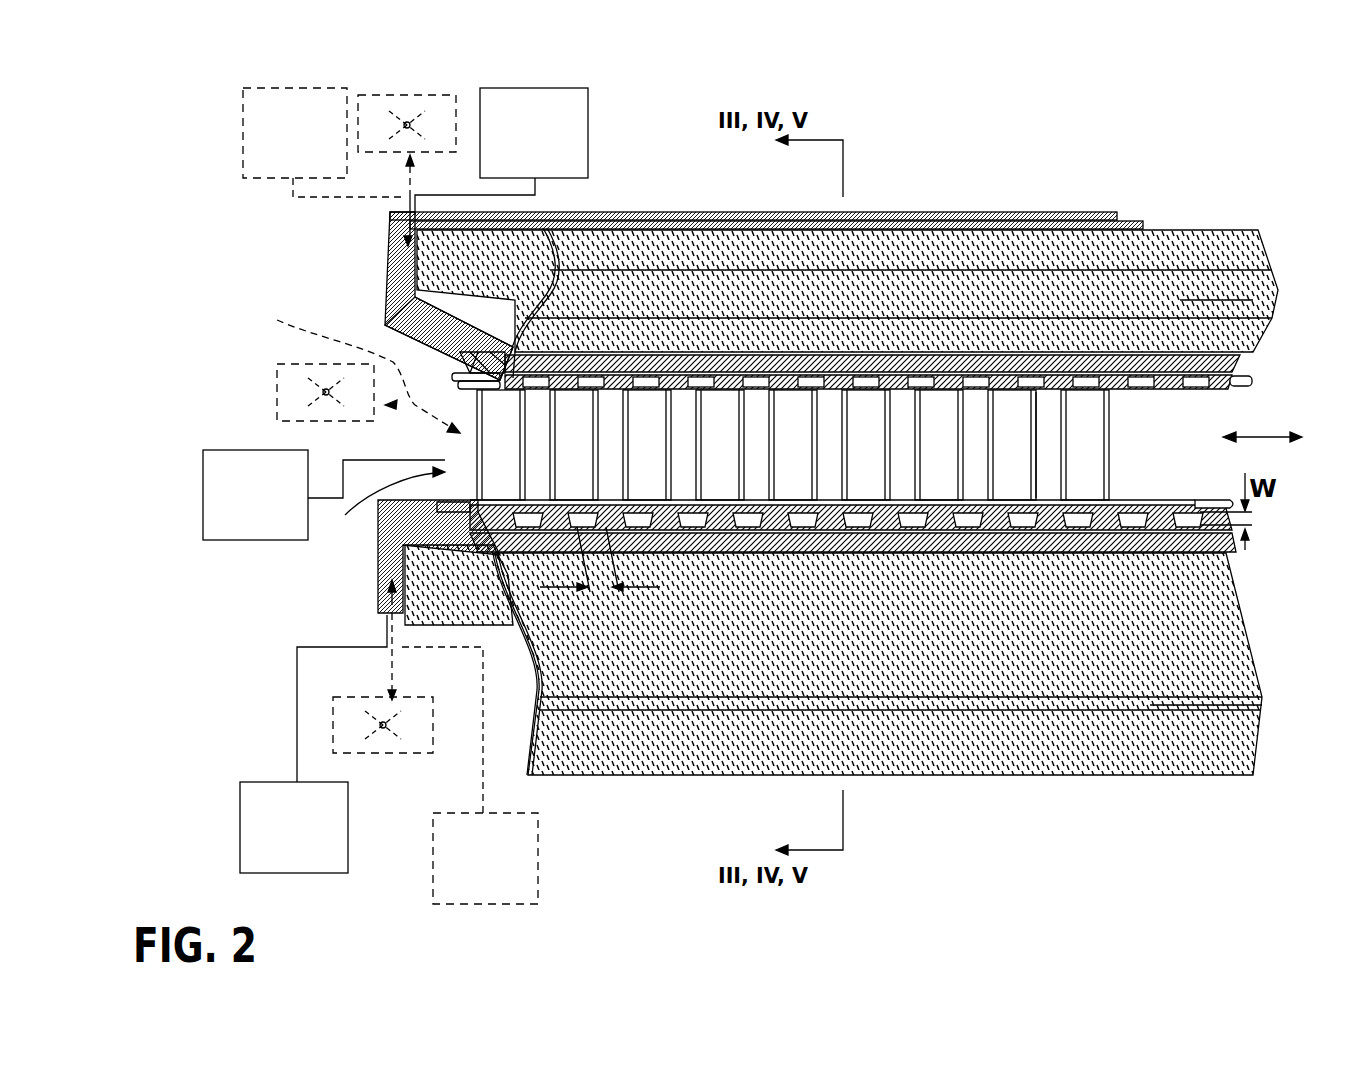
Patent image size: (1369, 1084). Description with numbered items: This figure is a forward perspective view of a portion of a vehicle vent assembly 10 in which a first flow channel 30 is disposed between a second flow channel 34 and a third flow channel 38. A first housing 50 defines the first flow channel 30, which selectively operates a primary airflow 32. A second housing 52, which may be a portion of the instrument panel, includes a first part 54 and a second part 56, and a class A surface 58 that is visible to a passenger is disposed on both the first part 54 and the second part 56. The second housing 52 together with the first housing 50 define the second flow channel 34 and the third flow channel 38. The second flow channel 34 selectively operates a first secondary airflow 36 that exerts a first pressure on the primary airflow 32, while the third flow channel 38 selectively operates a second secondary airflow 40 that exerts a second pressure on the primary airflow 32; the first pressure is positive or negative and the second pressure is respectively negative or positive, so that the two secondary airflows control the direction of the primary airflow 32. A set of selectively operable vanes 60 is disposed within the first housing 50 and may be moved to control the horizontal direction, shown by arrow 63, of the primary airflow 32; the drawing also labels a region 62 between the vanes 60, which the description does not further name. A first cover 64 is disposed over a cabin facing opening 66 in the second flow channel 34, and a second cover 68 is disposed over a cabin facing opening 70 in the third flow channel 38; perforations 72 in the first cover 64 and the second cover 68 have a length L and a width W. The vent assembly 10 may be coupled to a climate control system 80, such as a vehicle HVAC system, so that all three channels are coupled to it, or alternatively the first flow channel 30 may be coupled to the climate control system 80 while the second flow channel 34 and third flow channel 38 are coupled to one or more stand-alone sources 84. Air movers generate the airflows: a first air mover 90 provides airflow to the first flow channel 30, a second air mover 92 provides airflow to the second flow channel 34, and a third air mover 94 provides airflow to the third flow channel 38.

The vehicle vent assembly 10 is at (1280, 358).
The first flow channel 30 is at (387, 506).
The primary airflow 32 is at (356, 365).
The second flow channel 34 is at (455, 312).
The first secondary airflow 36 is at (413, 183).
The third flow channel 38 is at (475, 562).
The second secondary airflow 40 is at (387, 660).
The first housing 50 is at (390, 270).
The second housing 52 is at (490, 300).
The first part 54 is at (1070, 300).
The second part 56 is at (997, 653).
The class A surface 58 is at (1180, 300).
The selectively operable vanes 60 is at (1120, 447).
The air passage gap 62 is at (1107, 428).
The arrow 63 is at (1262, 439).
The first cover 64 is at (1225, 357).
The cabin facing opening 66 is at (450, 350).
The second cover 68 is at (1200, 550).
The cabin facing opening 70 is at (548, 560).
The perforations 72 is at (1030, 377).
The climate control system 80 is at (533, 88).
The stand-alone source 84 is at (232, 127).
The first air mover 90 is at (277, 392).
The second air mover 92 is at (418, 93).
The third air mover 94 is at (365, 760).